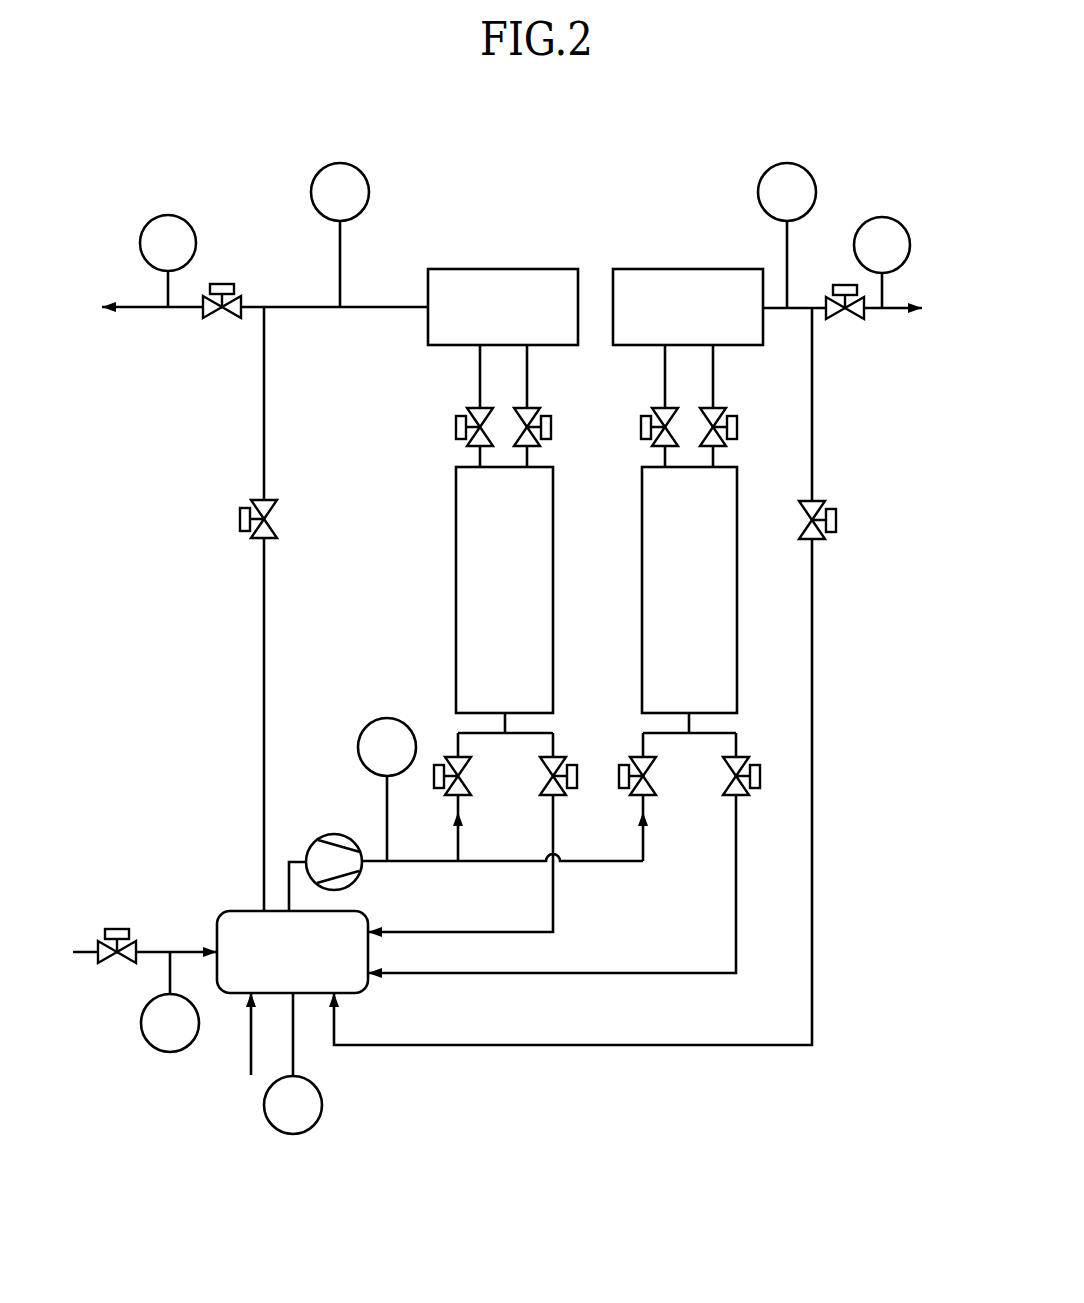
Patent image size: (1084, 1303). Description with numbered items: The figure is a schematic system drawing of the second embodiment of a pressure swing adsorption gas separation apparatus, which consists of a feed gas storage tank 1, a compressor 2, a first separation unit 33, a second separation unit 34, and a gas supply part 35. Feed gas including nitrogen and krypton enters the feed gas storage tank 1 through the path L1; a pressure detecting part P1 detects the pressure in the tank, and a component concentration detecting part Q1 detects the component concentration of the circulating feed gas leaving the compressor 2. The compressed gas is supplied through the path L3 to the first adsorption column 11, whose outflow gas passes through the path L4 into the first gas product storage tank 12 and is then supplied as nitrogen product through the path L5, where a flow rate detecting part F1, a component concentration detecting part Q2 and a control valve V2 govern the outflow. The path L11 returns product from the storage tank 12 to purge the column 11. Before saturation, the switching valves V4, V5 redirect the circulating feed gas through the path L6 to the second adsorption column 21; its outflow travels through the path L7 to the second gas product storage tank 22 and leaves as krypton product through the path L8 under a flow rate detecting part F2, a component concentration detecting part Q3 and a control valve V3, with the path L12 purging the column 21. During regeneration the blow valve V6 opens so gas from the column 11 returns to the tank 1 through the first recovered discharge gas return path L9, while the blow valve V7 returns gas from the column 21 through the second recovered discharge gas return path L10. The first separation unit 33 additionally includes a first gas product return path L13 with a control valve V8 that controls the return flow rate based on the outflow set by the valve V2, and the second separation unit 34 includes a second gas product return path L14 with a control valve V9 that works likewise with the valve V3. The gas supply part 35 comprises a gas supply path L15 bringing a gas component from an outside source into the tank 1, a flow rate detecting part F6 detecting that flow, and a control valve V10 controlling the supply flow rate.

The feed gas storage tank 1 is at (244, 908).
The compressor 2 is at (332, 835).
The first adsorption column 11 is at (456, 635).
The first gas product storage tank 12 is at (547, 269).
The second adsorption column 21 is at (737, 635).
The second gas product storage tank 22 is at (650, 269).
The first separation unit 33 is at (505, 406).
The second separation unit 34 is at (696, 406).
The gas supply part 35 is at (145, 942).
The flow rate detecting part F1 is at (160, 214).
The flow rate detecting part F2 is at (882, 217).
The flow rate detecting part F6 is at (152, 1047).
The component concentration detecting part Q1 is at (390, 718).
The component concentration detecting part Q2 is at (332, 163).
The component concentration detecting part Q3 is at (765, 168).
The pressure detecting part P1 is at (308, 1130).
The control valve V2 is at (222, 283).
The control valve V3 is at (855, 320).
The switching valve V4 is at (440, 757).
The switching valve V5 is at (630, 757).
The blow valve V6 is at (570, 757).
The blow valve V7 is at (757, 760).
The control valve V8 is at (247, 502).
The control valve V9 is at (830, 507).
The control valve V10 is at (115, 928).
The path L1 is at (251, 1053).
The path L3 is at (457, 842).
The path L4 is at (480, 402).
The path L5 is at (142, 309).
The path L6 is at (643, 838).
The path L7 is at (665, 402).
The path L8 is at (898, 310).
The first recovered discharge gas return path L9 is at (552, 902).
The second recovered discharge gas return path L10 is at (737, 918).
The path L11 is at (527, 402).
The path L12 is at (713, 402).
The first gas product return path L13 is at (264, 717).
The second gas product return path L14 is at (812, 822).
The gas supply path L15 is at (148, 960).